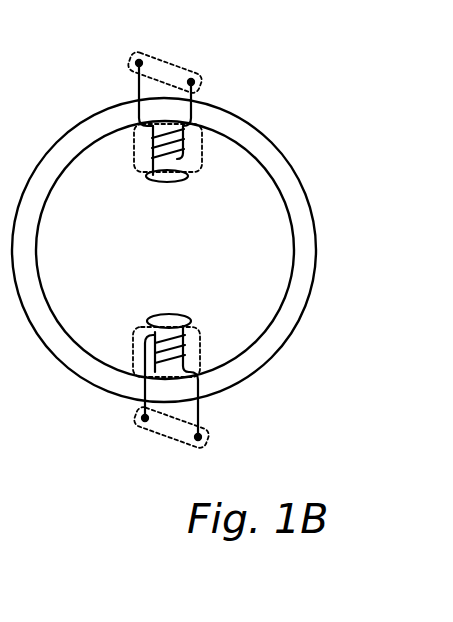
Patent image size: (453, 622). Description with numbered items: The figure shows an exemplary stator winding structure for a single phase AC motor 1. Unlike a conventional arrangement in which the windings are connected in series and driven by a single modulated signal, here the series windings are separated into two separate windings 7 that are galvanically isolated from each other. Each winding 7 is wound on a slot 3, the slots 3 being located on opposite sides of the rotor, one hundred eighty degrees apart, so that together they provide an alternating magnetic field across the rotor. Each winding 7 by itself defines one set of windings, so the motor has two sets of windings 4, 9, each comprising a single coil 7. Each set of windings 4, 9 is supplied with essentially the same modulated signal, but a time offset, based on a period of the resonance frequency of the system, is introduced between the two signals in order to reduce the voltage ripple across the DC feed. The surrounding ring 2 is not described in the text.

The single phase AC motor 1 is at (292, 54).
The ring 2 is at (305, 252).
The slots 3 is at (171, 181).
The set of windings 4 is at (157, 68).
The winding 7 is at (143, 328).
The set of windings 9 is at (172, 428).